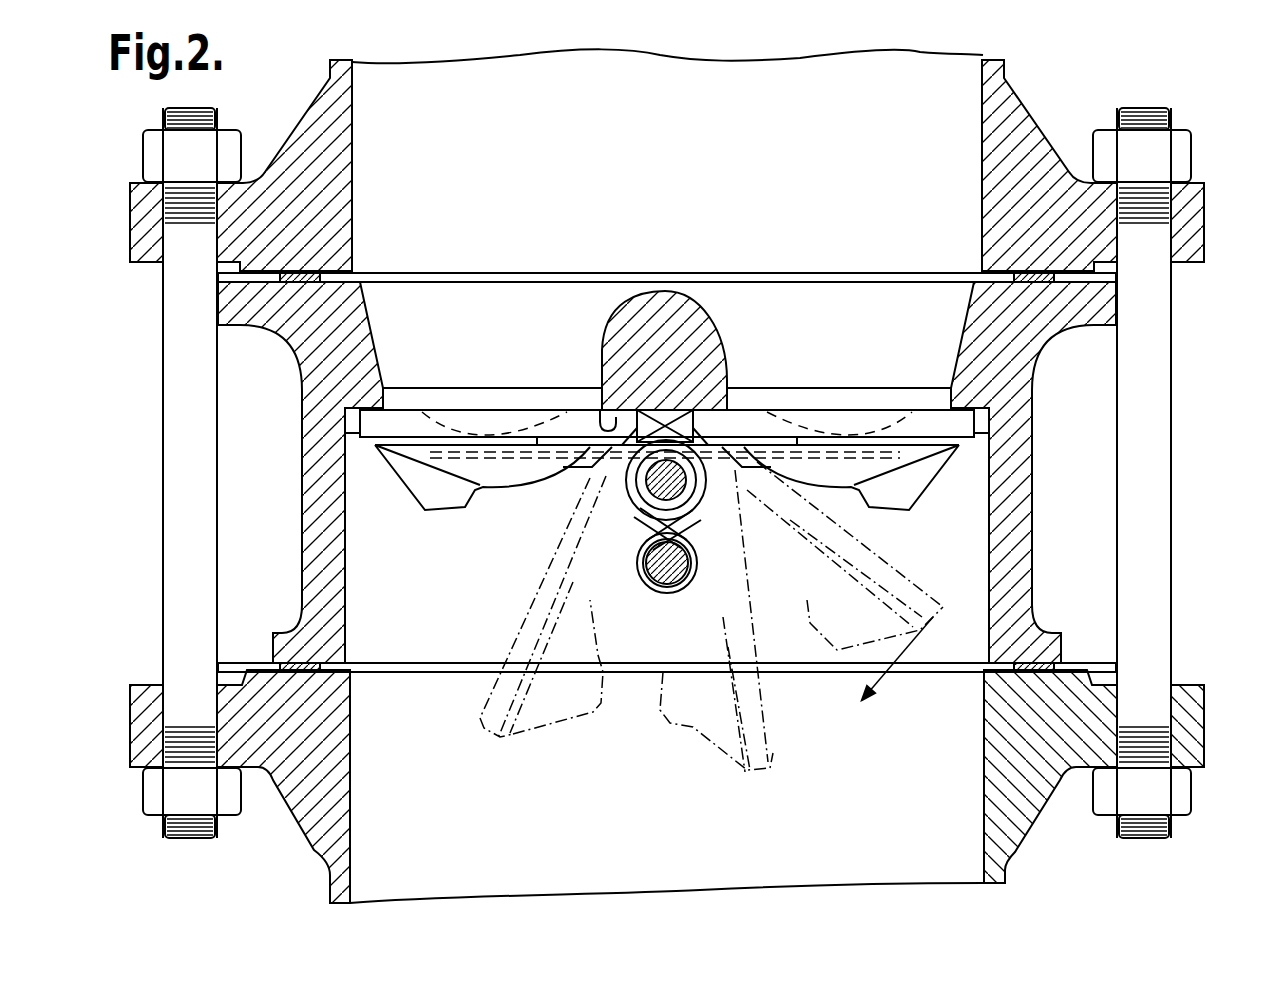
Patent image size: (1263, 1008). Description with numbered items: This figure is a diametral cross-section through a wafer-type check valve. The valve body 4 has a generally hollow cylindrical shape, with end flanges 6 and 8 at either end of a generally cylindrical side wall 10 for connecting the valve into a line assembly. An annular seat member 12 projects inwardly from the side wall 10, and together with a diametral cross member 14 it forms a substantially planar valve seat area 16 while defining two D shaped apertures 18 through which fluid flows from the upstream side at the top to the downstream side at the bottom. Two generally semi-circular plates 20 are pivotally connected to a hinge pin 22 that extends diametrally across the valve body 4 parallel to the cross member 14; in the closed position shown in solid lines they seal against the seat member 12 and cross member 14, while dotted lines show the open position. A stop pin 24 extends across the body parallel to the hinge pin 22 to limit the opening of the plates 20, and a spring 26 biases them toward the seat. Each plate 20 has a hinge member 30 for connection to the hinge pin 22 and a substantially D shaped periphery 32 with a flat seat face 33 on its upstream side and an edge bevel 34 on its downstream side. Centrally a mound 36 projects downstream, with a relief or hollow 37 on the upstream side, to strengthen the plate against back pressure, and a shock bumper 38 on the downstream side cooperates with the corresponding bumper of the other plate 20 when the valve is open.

The valve body 4 is at (1040, 420).
The end flange 6 is at (1107, 305).
The end flange 8 is at (1060, 650).
The side wall 10 is at (1020, 547).
The annular seat member 12 is at (973, 420).
The diametral cross member 14 is at (678, 303).
The valve seat area 16 is at (612, 416).
The D shaped apertures 18 is at (477, 395).
The semi-circular plates 20 is at (375, 421).
The hinge pin 22 is at (655, 482).
The stop pin 24 is at (660, 562).
The spring 26 is at (647, 587).
The hinge member 30 is at (740, 470).
The D shaped periphery 32 is at (962, 447).
The flat seat face 33 is at (963, 418).
The edge bevel 34 is at (963, 448).
The mound 36 is at (837, 470).
The relief 37 is at (850, 430).
The shock bumper 38 is at (910, 510).